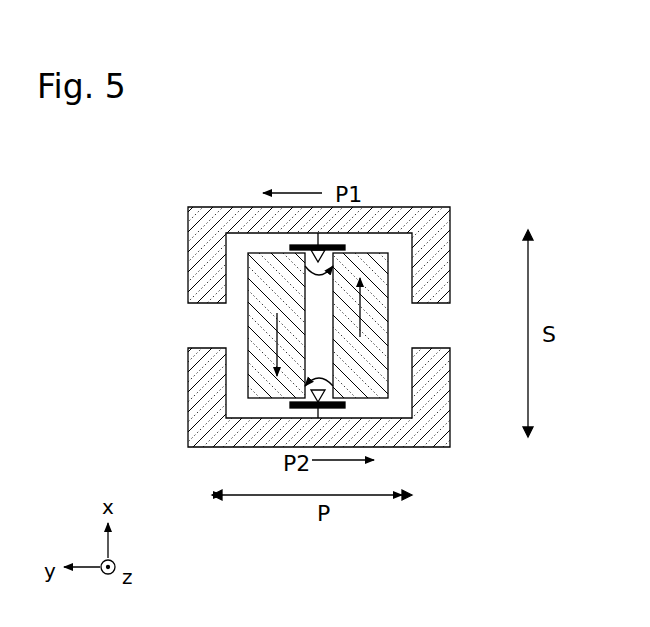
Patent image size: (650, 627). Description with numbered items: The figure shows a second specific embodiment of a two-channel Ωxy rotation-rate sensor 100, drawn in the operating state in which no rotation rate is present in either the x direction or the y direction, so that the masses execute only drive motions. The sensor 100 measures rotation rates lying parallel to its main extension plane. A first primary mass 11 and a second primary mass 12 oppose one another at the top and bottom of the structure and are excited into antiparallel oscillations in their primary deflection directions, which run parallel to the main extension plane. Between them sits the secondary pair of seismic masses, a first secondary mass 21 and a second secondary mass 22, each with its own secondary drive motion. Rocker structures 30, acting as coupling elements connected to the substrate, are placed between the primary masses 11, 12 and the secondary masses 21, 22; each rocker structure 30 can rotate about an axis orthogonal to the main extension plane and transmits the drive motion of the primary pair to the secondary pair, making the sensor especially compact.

The rotation-rate sensor 100 is at (516, 157).
The first primary mass 11 is at (196, 236).
The second primary mass 12 is at (198, 410).
The first secondary mass 21 is at (250, 269).
The second secondary mass 22 is at (334, 268).
The rocker structure 30 is at (350, 222).